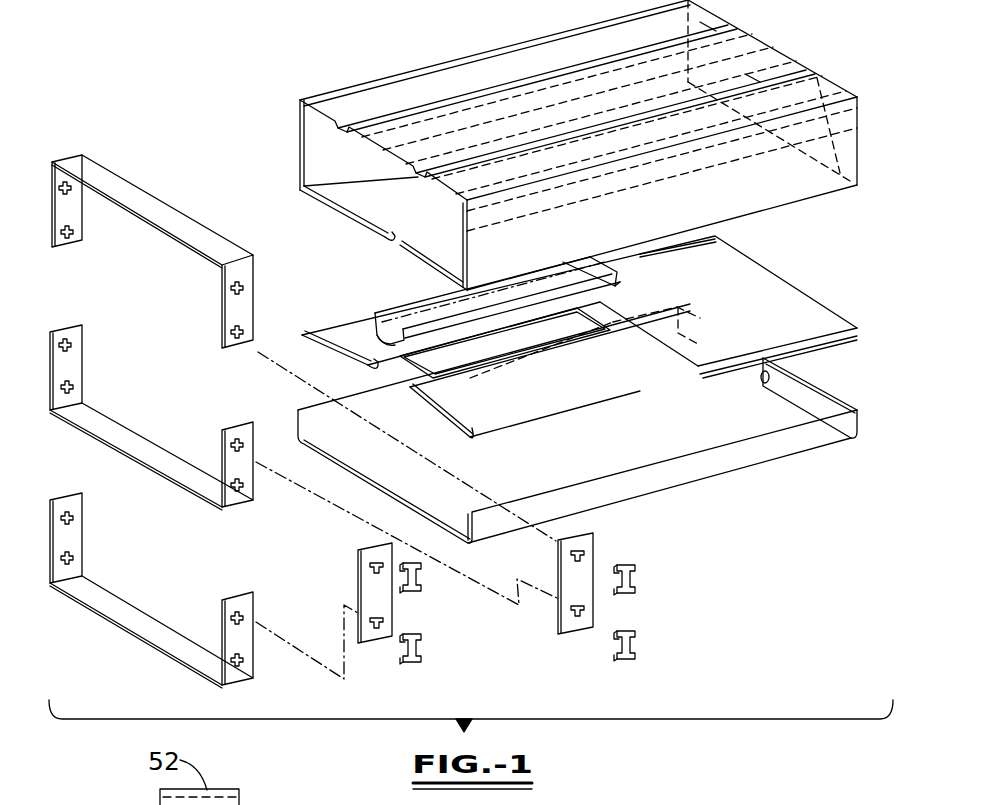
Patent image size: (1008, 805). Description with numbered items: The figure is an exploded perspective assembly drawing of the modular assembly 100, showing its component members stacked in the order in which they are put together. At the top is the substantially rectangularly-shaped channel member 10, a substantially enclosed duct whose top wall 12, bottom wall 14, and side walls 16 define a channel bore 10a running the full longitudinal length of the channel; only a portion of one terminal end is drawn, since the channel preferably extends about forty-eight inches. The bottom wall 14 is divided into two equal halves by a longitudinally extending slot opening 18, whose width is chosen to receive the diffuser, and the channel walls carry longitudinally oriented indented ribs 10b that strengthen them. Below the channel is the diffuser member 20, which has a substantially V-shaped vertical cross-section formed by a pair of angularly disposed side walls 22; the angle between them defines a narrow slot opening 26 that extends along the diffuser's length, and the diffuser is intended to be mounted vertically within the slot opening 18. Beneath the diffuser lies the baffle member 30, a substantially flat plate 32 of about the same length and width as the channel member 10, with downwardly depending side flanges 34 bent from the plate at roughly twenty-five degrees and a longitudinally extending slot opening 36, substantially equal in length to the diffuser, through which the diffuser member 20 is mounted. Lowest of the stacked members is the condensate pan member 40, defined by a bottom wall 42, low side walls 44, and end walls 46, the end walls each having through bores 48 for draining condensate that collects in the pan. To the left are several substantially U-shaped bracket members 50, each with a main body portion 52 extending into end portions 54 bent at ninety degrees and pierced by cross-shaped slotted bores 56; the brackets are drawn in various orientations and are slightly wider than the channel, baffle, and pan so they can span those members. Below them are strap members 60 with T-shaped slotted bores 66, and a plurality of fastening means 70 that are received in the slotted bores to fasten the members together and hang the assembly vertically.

The channel member 10 is at (531, 145).
The channel bore 10a is at (333, 133).
The indented ribs 10b is at (710, 28).
The top wall 12 is at (522, 100).
The bottom wall 14 is at (302, 188).
The side walls 16 is at (298, 158).
The slot opening 18 is at (385, 238).
The diffuser member 20 is at (461, 301).
The side walls 22 is at (432, 300).
The slot opening 26 is at (383, 340).
The baffle member 30 is at (601, 303).
The flat plate 32 is at (800, 298).
The side flanges 34 is at (697, 233).
The slot opening 36 is at (376, 366).
The condensate pan member 40 is at (567, 425).
The bottom wall 42 is at (560, 460).
The side walls 44 is at (300, 410).
The end walls 46 is at (838, 398).
The through bores 48 is at (765, 383).
The bracket members 50 is at (175, 402).
The main body portion 52 is at (163, 204).
The end portions 54 is at (57, 248).
The cross-shaped slotted bores 56 is at (70, 240).
The strap members 60 is at (443, 602).
The T-shaped slotted bores 66 is at (377, 571).
The fastening means 70 is at (425, 585).
The modular assembly 100 is at (476, 347).